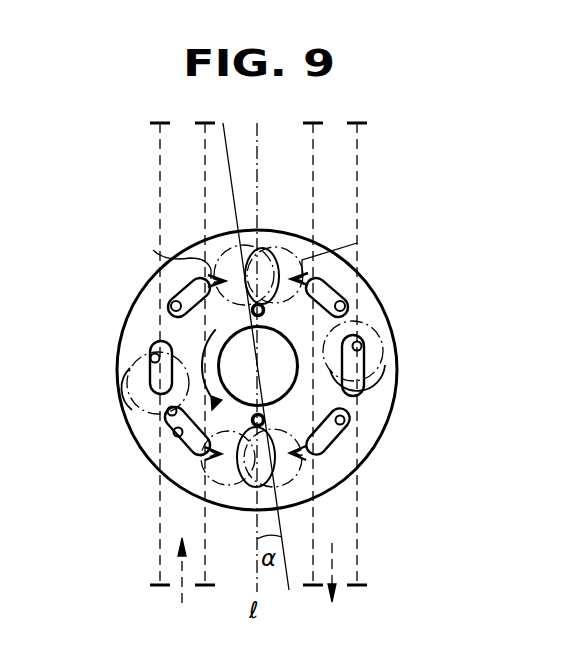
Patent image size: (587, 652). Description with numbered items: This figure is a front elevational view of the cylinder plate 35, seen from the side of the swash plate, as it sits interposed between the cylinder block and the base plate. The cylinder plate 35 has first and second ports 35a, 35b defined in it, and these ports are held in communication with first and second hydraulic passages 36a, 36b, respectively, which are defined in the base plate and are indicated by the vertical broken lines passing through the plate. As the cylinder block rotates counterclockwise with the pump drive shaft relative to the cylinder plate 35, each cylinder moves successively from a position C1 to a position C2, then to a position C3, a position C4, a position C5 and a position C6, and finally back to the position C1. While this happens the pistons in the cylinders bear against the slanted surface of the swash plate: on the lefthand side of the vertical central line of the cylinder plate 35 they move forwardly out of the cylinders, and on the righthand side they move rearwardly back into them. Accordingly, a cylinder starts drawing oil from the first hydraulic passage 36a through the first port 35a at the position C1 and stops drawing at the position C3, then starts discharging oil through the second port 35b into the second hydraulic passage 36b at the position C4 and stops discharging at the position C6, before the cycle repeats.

The cylinder plate 35 is at (373, 284).
The first port 35a is at (170, 306).
The second port 35b is at (345, 308).
The first hydraulic passage 36a is at (160, 188).
The second hydraulic passage 36b is at (358, 200).
The position C1 is at (153, 250).
The position C2 is at (126, 392).
The position C3 is at (195, 497).
The position C4 is at (330, 492).
The position C5 is at (398, 372).
The position C6 is at (357, 243).